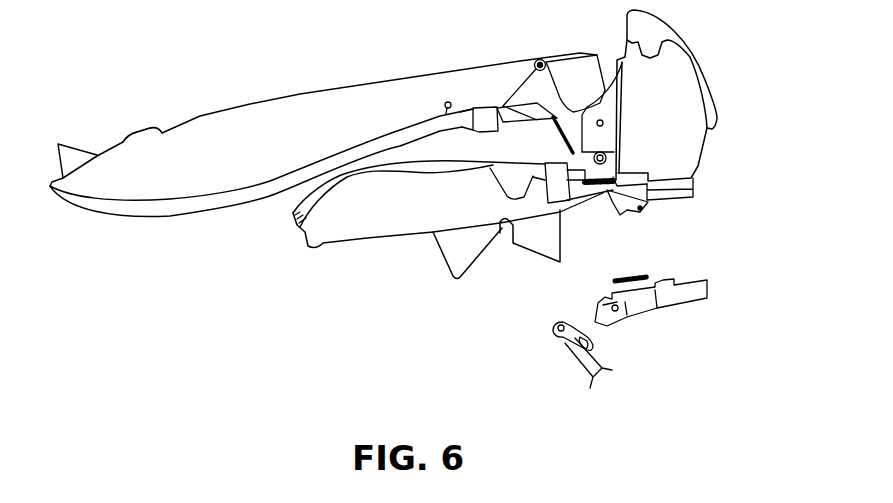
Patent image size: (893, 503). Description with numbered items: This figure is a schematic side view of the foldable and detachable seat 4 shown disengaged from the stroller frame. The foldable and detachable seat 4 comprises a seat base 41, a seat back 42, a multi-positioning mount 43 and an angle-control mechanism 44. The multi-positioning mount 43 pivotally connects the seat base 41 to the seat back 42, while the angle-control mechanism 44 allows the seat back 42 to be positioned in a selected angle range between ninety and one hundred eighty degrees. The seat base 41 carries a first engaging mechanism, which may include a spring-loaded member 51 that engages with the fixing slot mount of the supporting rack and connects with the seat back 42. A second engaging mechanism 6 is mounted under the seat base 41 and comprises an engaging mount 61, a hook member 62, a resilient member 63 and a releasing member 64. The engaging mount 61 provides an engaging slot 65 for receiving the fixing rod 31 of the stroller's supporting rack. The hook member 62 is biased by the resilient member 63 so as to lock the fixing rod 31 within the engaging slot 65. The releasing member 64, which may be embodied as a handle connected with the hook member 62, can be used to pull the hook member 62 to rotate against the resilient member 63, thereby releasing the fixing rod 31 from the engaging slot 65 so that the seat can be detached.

The foldable and detachable seat 4 is at (206, 86).
The seat back 42 is at (306, 110).
The angle-control mechanism 44 is at (135, 129).
The multi-positioning mount 43 is at (693, 143).
The seat base 41 is at (348, 211).
The engaging mount 61 is at (450, 247).
The engaging slot 65 is at (505, 264).
The spring-loaded member 51 is at (605, 206).
The resilient member 63 is at (640, 275).
The releasing member 64 is at (640, 309).
The hook member 62 is at (556, 331).
The fixing rod 31 is at (578, 378).
The second engaging mechanism 6 is at (362, 342).